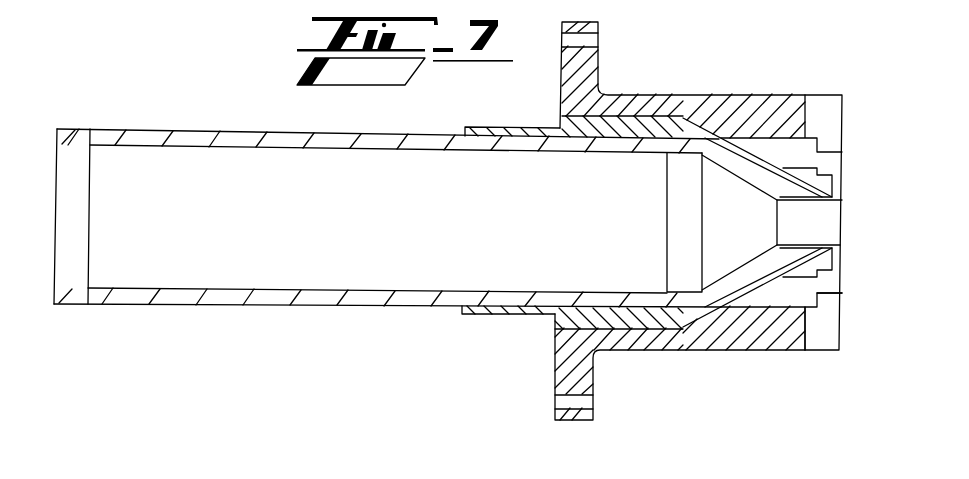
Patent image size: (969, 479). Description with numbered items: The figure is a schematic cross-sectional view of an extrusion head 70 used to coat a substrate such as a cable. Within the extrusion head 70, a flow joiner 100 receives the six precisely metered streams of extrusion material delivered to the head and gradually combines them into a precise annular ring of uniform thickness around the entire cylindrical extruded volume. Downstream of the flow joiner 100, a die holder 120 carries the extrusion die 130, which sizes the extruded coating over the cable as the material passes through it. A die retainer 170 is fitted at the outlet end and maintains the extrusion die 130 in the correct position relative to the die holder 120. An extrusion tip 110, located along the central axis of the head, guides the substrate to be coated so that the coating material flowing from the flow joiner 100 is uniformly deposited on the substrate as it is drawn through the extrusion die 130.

The extrusion head 70 is at (651, 364).
The flow joiner 100 is at (692, 125).
The extrusion tip 110 is at (750, 170).
The die holder 120 is at (630, 97).
The extrusion die 130 is at (803, 273).
The die retainer 170 is at (823, 338).